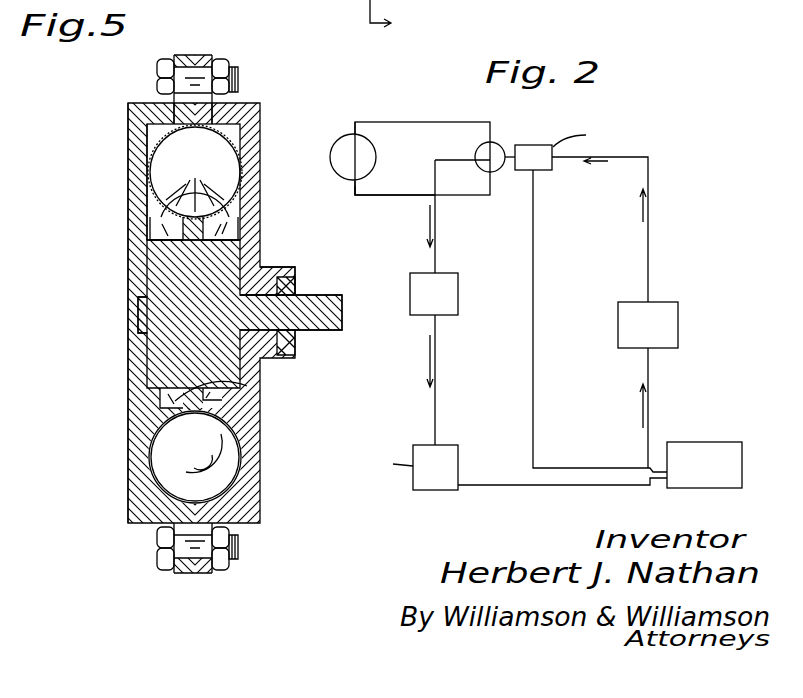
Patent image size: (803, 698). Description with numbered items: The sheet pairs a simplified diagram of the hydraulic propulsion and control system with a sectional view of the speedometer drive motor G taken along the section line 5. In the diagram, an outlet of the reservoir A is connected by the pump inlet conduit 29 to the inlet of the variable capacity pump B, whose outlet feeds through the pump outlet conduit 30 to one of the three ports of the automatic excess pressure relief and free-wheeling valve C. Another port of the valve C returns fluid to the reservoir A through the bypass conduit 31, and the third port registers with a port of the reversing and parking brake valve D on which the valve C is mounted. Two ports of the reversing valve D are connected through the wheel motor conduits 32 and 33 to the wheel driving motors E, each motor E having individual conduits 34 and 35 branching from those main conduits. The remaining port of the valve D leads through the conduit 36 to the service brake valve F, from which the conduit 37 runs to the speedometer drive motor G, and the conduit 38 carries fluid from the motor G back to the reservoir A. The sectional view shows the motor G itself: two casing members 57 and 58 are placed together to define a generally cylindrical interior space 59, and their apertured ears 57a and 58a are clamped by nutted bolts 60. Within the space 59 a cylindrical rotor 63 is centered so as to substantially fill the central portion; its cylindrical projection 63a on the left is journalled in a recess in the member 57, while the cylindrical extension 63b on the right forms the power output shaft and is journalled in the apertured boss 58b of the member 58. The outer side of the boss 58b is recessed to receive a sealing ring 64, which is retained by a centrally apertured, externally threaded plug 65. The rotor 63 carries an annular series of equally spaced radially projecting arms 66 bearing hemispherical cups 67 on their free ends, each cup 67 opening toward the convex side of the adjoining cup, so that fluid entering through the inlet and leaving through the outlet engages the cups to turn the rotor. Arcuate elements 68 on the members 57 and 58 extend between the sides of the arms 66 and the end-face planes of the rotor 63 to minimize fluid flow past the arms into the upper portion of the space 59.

In FIG. 5, the casing member 57 is at (150, 132).
In FIG. 5, the casing member 58 is at (262, 113).
In FIG. 5, the ear 57a is at (182, 56).
In FIG. 5, the ear 58a is at (203, 56).
In FIG. 5, the nutted bolt 60 is at (240, 78).
In FIG. 5, the interior space 59 is at (157, 134).
In FIG. 5, the hemispherical cup 67 is at (182, 195).
In FIG. 5, the radially projecting arm 66 is at (190, 229).
In FIG. 5, the arcuate element 68 is at (234, 382).
In FIG. 5, the rotor 63 is at (230, 313).
In FIG. 5, the cylindrical projection 63a is at (141, 313).
In FIG. 5, the cylindrical extension 63b is at (330, 316).
In FIG. 5, the boss 58b is at (268, 275).
In FIG. 5, the plug 65 is at (292, 294).
In FIG. 5, the sealing ring 64 is at (283, 356).
In FIG. 5, the speedometer drive motor G is at (197, 349).
In FIG. 2, the speedometer drive motor G is at (443, 452).
In FIG. 2, the section line 5 is at (390, 18).
In FIG. 2, the wheel driving motor E is at (334, 142).
In FIG. 2, the wheel motor conduit 32 is at (402, 122).
In FIG. 2, the individual conduit 34 is at (356, 127).
In FIG. 2, the wheel motor conduit 33 is at (377, 195).
In FIG. 2, the individual conduit 35 is at (355, 190).
In FIG. 2, the reversing and parking brake valve D is at (497, 150).
In FIG. 2, the automatic excess pressure relief and free-wheeling valve C is at (530, 150).
In FIG. 2, the pump outlet conduit 30 is at (650, 221).
In FIG. 2, the bypass conduit 31 is at (535, 272).
In FIG. 2, the pump B is at (665, 303).
In FIG. 2, the pump inlet conduit 29 is at (652, 400).
In FIG. 2, the reservoir A is at (692, 443).
In FIG. 2, the conduit 36 is at (440, 233).
In FIG. 2, the service brake valve F is at (460, 291).
In FIG. 2, the conduit 37 is at (440, 368).
In FIG. 2, the conduit 38 is at (520, 479).